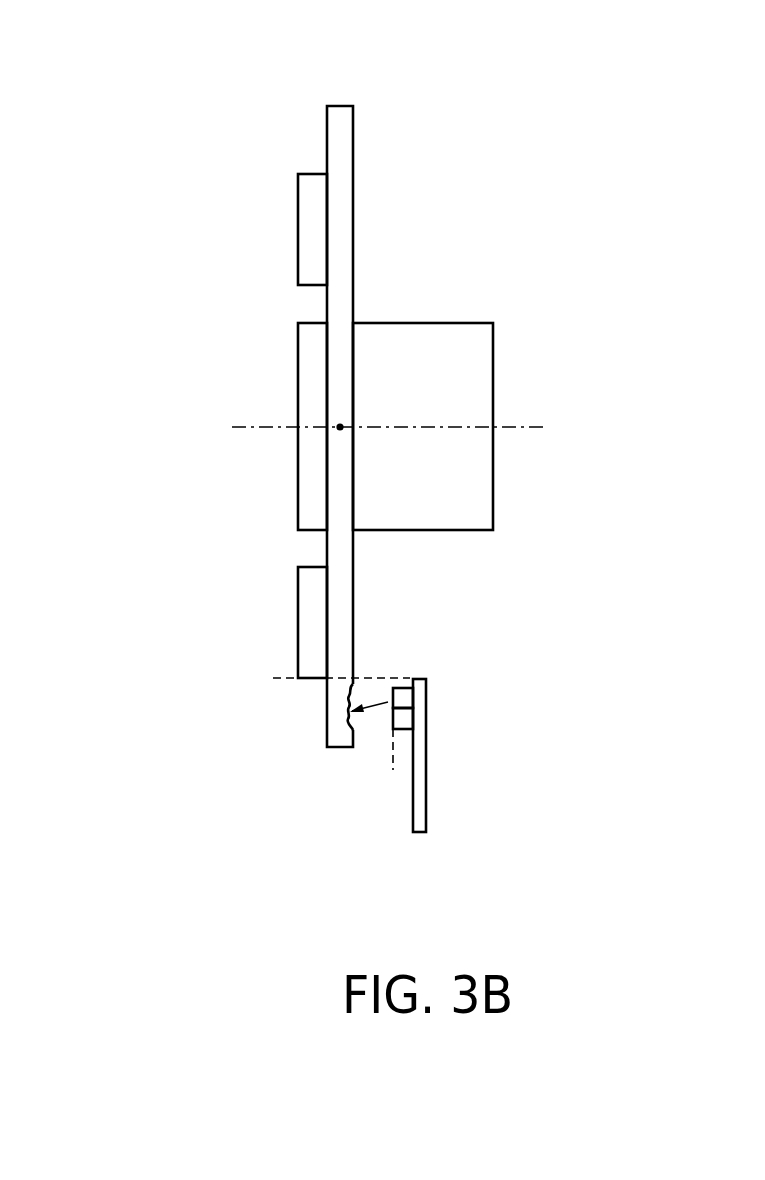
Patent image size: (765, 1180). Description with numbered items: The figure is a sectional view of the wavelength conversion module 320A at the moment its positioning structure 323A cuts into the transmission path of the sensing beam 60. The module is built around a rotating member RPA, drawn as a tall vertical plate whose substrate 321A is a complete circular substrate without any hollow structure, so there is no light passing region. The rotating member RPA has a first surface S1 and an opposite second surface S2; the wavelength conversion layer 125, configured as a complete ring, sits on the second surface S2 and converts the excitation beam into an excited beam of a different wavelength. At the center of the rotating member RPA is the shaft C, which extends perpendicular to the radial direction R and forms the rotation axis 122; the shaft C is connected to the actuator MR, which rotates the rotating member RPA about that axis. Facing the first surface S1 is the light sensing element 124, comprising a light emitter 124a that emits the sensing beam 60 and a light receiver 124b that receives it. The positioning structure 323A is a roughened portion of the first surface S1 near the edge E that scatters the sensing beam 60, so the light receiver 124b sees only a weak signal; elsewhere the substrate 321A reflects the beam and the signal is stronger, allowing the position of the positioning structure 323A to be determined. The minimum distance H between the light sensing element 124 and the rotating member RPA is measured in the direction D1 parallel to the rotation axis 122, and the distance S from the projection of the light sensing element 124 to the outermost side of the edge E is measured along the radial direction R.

The wavelength conversion module 320A is at (663, 843).
The substrate 321A is at (342, 233).
The positioning structure 323A is at (357, 692).
The rotating member RPA is at (143, 10).
The wavelength conversion layer 125 is at (312, 233).
The actuator MR is at (478, 363).
The shaft C is at (340, 422).
The rotation axis 122 is at (543, 427).
The sensing beam 60 is at (388, 702).
The light sensing element 124 is at (413, 783).
The light emitter 124a is at (408, 697).
The light receiver 124b is at (408, 718).
The first surface S1 is at (354, 132).
The second surface S2 is at (327, 132).
The edge E is at (345, 748).
The minimum distance H is at (391, 767).
The distance S is at (285, 680).
The radial direction R is at (223, 642).
The direction D1 is at (358, 873).